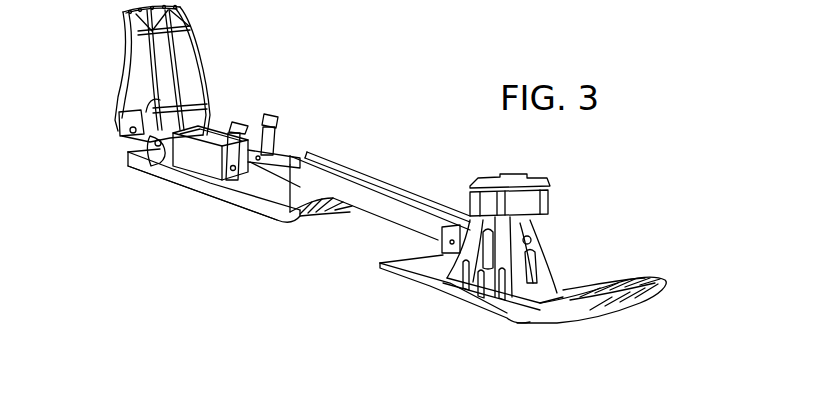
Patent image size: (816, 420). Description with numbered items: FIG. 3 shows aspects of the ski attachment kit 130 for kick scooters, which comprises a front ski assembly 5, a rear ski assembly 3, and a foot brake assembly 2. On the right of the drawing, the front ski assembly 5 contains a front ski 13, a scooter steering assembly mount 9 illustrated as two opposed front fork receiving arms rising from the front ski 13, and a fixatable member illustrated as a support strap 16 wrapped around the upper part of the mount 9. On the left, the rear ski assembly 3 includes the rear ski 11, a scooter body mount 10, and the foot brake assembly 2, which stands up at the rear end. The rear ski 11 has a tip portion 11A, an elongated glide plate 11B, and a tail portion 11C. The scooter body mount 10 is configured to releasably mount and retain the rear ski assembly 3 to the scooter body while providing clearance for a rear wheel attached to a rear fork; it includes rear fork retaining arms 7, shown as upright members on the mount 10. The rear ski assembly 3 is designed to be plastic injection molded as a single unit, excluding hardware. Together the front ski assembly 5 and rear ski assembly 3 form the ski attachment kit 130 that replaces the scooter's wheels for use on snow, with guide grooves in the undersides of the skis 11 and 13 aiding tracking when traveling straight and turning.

The foot brake assembly 2 is at (220, 53).
The ski attachment kit 130 is at (398, 63).
The rear fork retaining arms 7 is at (255, 110).
The scooter body mount 10 is at (317, 141).
The rear ski assembly 3 is at (378, 162).
The scooter steering assembly mount 9 is at (492, 167).
The support strap 16 is at (548, 197).
The front ski assembly 5 is at (592, 240).
The rear ski 11 is at (188, 178).
The tip portion 11A is at (315, 215).
The elongated glide plate 11B is at (223, 208).
The tail portion 11C is at (128, 166).
The front ski 13 is at (423, 268).